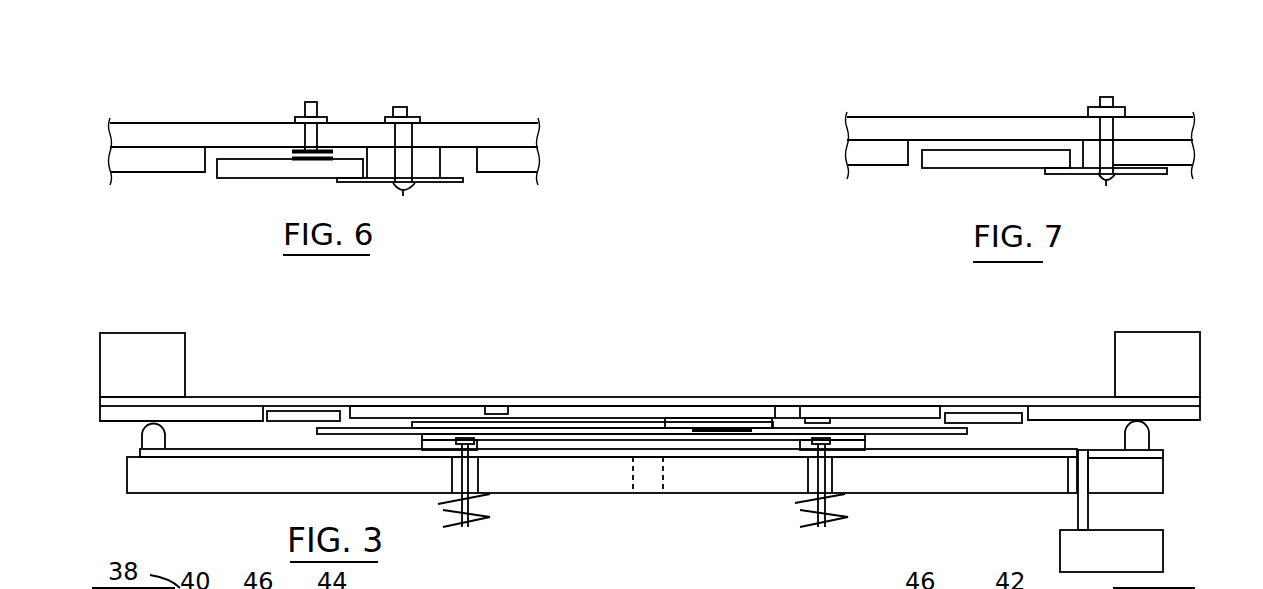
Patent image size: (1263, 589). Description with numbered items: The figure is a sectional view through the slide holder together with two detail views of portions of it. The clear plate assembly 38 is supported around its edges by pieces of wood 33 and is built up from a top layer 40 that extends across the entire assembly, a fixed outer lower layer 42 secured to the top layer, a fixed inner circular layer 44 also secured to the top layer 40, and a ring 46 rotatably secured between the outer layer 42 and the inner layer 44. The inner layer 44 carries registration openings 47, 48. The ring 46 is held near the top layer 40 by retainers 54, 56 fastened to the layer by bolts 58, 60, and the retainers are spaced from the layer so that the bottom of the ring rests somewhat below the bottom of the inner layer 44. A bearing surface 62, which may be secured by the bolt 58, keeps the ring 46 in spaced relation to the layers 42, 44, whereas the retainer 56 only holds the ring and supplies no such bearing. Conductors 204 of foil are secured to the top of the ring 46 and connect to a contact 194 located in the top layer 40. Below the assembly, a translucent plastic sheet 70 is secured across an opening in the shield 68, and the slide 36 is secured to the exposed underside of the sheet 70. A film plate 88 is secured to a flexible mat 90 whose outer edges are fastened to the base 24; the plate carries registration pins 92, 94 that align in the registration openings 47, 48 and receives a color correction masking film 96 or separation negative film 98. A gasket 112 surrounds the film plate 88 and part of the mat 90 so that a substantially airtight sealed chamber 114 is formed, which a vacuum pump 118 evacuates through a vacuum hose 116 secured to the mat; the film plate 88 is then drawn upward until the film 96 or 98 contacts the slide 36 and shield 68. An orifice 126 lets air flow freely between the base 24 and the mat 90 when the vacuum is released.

In FIG. 3, the base 24 is at (213, 480).
In FIG. 3, the pieces of wood 33 is at (110, 383).
In FIG. 3, the slide 36 is at (713, 430).
In FIG. 3, the clear plate assembly 38 is at (208, 390).
In FIG. 6, the top layer 40 is at (162, 135).
In FIG. 7, the top layer 40 is at (898, 123).
In FIG. 3, the top layer 40 is at (227, 402).
In FIG. 6, the fixed outer lower layer 42 is at (485, 168).
In FIG. 7, the fixed outer lower layer 42 is at (1147, 157).
In FIG. 3, the fixed outer lower layer 42 is at (120, 421).
In FIG. 6, the fixed inner circular layer 44 is at (151, 163).
In FIG. 7, the fixed inner circular layer 44 is at (893, 160).
In FIG. 3, the fixed inner circular layer 44 is at (370, 415).
In FIG. 6, the ring 46 is at (257, 170).
In FIG. 7, the ring 46 is at (970, 163).
In FIG. 3, the ring 46 is at (318, 417).
In FIG. 3, the registration opening 47 is at (492, 405).
In FIG. 3, the registration opening 48 is at (793, 413).
In FIG. 6, the retainer 54 is at (448, 183).
In FIG. 7, the retainer 56 is at (1153, 172).
In FIG. 6, the bolt 58 is at (402, 113).
In FIG. 7, the bolt 60 is at (1107, 100).
In FIG. 6, the bearing surface 62 is at (382, 158).
In FIG. 3, the shield 68 is at (400, 430).
In FIG. 3, the translucent plastic sheet 70 is at (680, 422).
In FIG. 3, the film plate 88 is at (690, 443).
In FIG. 3, the flexible mat 90 is at (955, 453).
In FIG. 3, the registration pin 92 is at (490, 440).
In FIG. 3, the registration pin 94 is at (780, 437).
In FIG. 3, the color correction masking film 96 is at (813, 417).
In FIG. 3, the separation negative film 98 is at (593, 435).
In FIG. 3, the gasket 112 is at (147, 439).
In FIG. 3, the sealed chamber 114 is at (200, 445).
In FIG. 3, the vacuum hose 116 is at (1095, 500).
In FIG. 3, the vacuum pump 118 is at (1165, 545).
In FIG. 3, the orifice 126 is at (645, 482).
In FIG. 6, the contact 194 is at (310, 100).
In FIG. 6, the conductor 204 is at (315, 160).